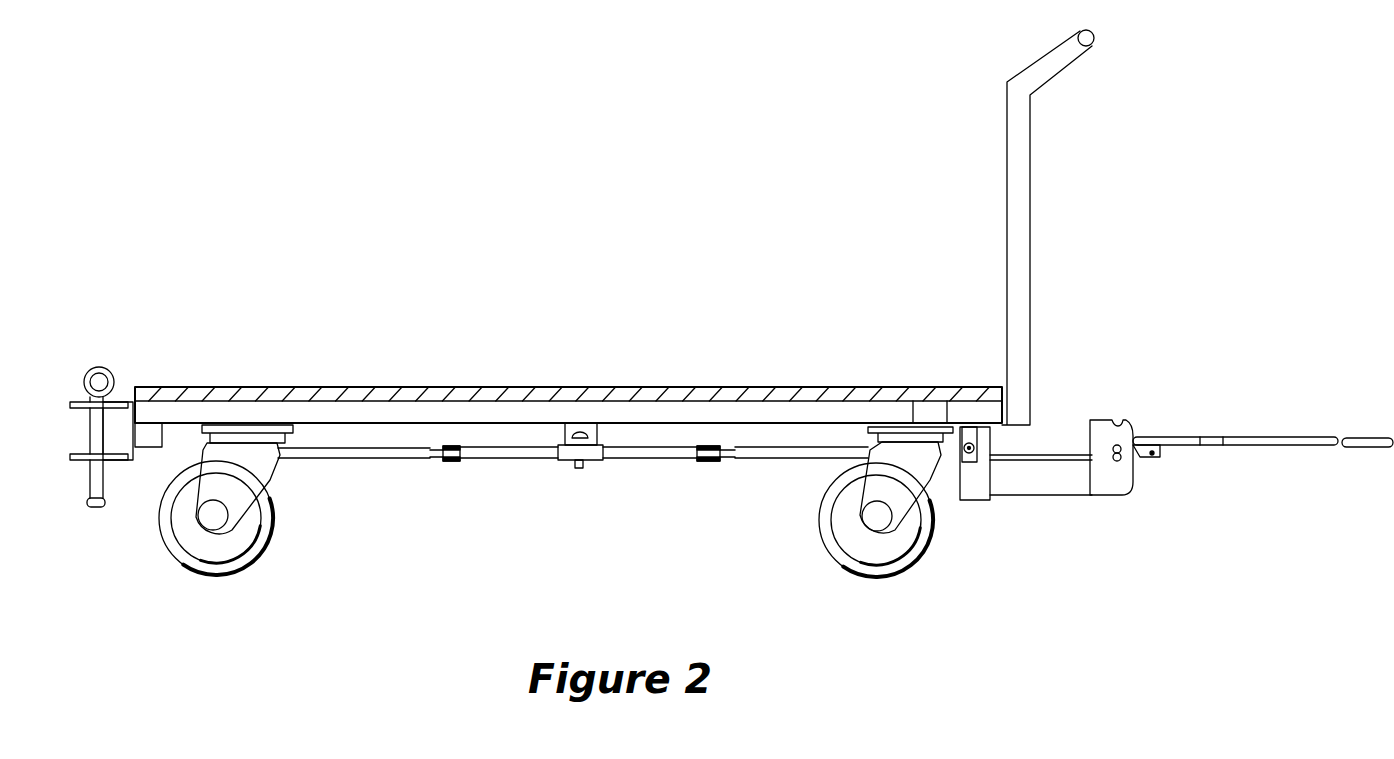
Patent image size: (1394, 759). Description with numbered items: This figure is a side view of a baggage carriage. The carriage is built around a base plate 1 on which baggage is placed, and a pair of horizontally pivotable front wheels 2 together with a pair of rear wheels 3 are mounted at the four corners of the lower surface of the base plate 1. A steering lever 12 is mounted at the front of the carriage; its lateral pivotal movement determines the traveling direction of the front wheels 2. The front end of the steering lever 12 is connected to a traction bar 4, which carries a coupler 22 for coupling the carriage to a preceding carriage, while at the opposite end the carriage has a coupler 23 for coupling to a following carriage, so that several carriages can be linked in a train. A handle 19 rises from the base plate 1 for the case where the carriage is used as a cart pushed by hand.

The base plate 1 is at (594, 397).
The front wheel 2 is at (908, 555).
The rear wheel 3 is at (248, 553).
The traction bar 4 is at (1225, 440).
The steering lever 12 is at (1075, 497).
The handle 19 is at (1095, 37).
The coupler 22 is at (1367, 440).
The coupler 23 is at (78, 400).